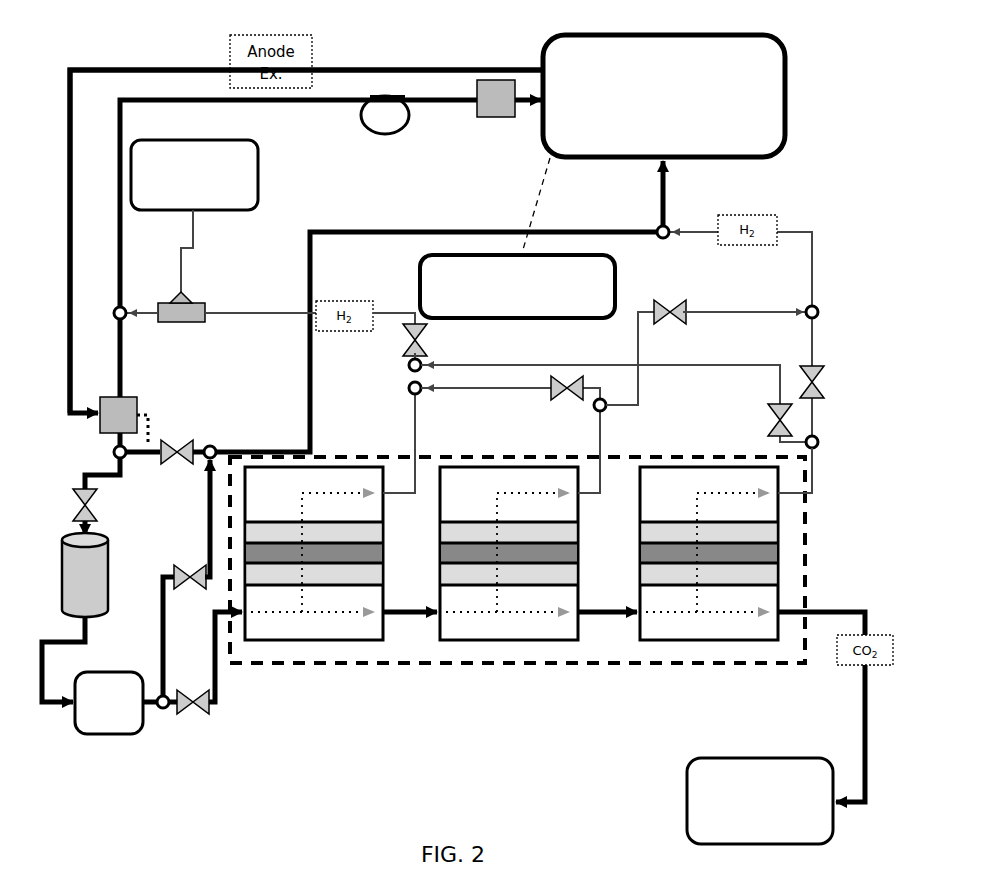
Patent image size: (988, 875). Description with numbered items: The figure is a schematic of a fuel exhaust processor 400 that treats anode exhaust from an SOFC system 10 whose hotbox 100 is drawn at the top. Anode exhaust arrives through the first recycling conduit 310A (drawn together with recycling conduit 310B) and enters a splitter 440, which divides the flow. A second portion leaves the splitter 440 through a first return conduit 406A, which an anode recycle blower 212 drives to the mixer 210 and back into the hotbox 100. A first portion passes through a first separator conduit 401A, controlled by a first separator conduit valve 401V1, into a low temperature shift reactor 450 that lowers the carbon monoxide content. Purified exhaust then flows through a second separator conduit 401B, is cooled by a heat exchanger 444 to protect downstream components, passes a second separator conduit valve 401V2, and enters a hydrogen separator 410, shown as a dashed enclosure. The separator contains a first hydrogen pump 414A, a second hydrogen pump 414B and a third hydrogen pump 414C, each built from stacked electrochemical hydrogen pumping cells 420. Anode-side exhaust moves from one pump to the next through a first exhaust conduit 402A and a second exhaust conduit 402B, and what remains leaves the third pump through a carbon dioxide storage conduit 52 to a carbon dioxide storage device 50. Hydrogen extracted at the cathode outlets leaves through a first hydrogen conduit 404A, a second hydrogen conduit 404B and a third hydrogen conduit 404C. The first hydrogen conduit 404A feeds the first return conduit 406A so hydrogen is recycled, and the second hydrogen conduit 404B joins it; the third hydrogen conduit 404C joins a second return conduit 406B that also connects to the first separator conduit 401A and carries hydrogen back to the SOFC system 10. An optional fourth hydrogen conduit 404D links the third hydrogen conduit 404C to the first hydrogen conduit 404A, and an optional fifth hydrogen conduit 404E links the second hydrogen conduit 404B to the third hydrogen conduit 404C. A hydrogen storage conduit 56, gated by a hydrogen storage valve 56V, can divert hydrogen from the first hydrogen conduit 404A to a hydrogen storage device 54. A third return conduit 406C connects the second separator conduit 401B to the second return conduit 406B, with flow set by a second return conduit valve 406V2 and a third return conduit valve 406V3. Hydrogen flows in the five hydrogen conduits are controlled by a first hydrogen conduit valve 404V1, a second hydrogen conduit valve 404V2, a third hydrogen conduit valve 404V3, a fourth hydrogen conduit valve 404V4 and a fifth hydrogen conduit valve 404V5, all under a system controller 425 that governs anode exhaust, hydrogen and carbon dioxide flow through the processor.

The SOFC system 10 is at (450, 811).
The hotbox 100 is at (664, 96).
The fuel exhaust processor 400 is at (837, 143).
The first recycling conduit 310A is at (137, 68).
The recycling conduit 310B is at (306, 241).
The first return conduit 406A is at (122, 133).
The mixer 210 is at (496, 79).
The anode recycle blower 212 is at (385, 115).
The second return conduit 406B is at (423, 230).
The hydrogen storage device 54 is at (194, 175).
The hydrogen storage conduit 56 is at (197, 250).
The hydrogen storage valve 56V is at (176, 297).
The system controller 425 is at (517, 286).
The splitter 440 is at (140, 410).
The second return conduit valve 406V2 is at (193, 447).
The first separator conduit 401A is at (121, 462).
The first separator conduit valve 401V1 is at (78, 492).
The low temperature shift reactor 450 is at (85, 575).
The second separator conduit 401B is at (56, 640).
The heat exchanger 444 is at (109, 703).
The second separator conduit valve 401V2 is at (193, 708).
The third return conduit 406C is at (162, 620).
The third return conduit valve 406V3 is at (186, 565).
The hydrogen separator 410 is at (520, 670).
The first hydrogen pump 414A is at (315, 645).
The second hydrogen pump 414B is at (508, 645).
The third hydrogen pump 414C is at (710, 643).
The hydrogen pumping cells 420 is at (786, 548).
The first exhaust conduit 402A is at (405, 645).
The second exhaust conduit 402B is at (613, 645).
The carbon dioxide storage conduit 52 is at (865, 720).
The carbon dioxide storage device 50 is at (760, 801).
The first hydrogen conduit valve 404V1 is at (421, 338).
The first hydrogen conduit 404A is at (410, 500).
The second hydrogen conduit 404B is at (602, 500).
The third hydrogen conduit 404C is at (815, 250).
The fourth hydrogen conduit 404D is at (717, 370).
The fifth hydrogen conduit 404E is at (627, 408).
The second hydrogen conduit valve 404V2 is at (565, 395).
The third hydrogen conduit valve 404V3 is at (822, 380).
The fourth hydrogen conduit valve 404V4 is at (783, 420).
The fifth hydrogen conduit valve 404V5 is at (670, 300).